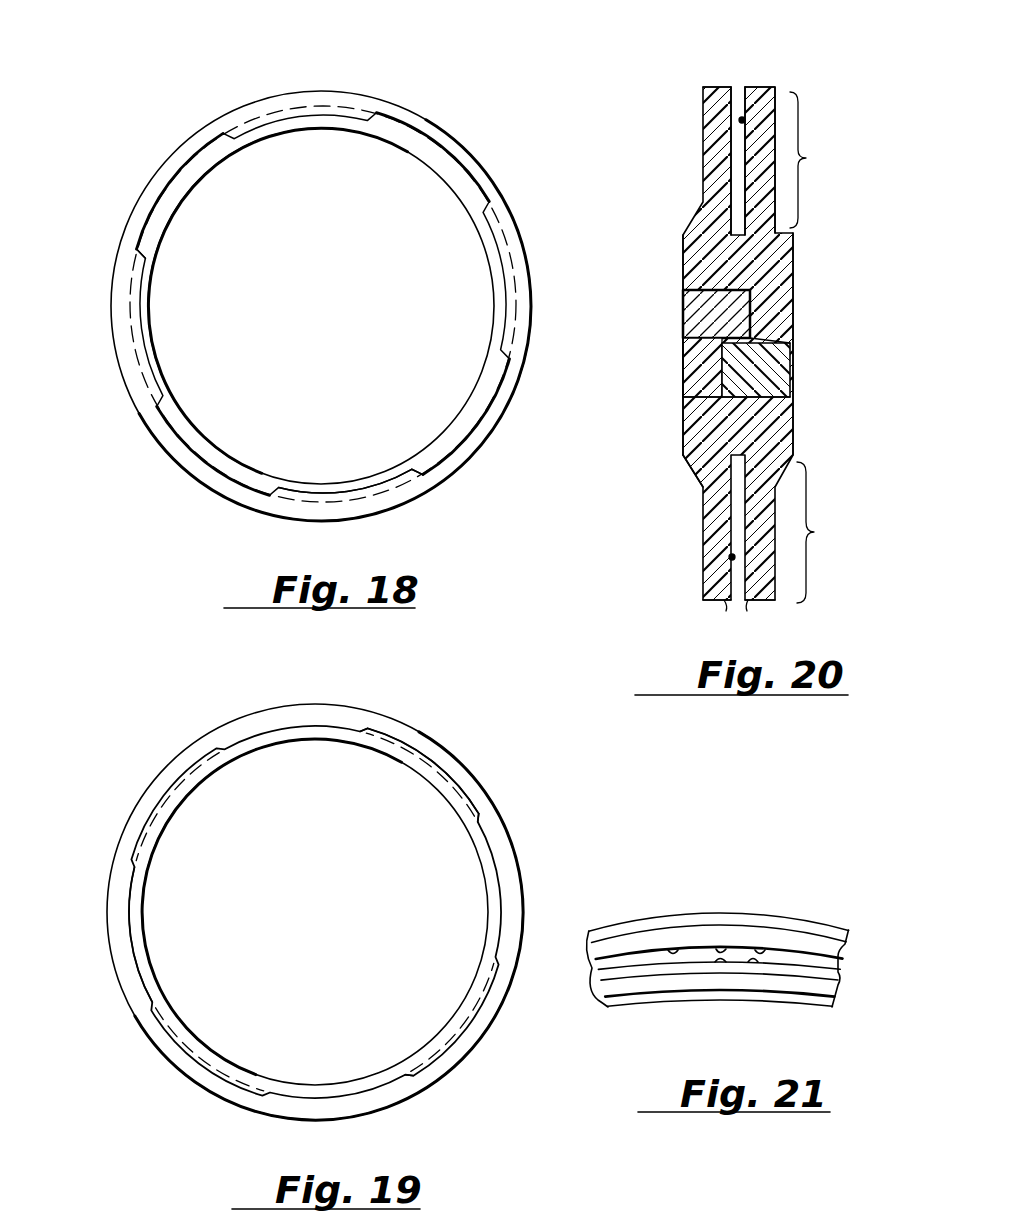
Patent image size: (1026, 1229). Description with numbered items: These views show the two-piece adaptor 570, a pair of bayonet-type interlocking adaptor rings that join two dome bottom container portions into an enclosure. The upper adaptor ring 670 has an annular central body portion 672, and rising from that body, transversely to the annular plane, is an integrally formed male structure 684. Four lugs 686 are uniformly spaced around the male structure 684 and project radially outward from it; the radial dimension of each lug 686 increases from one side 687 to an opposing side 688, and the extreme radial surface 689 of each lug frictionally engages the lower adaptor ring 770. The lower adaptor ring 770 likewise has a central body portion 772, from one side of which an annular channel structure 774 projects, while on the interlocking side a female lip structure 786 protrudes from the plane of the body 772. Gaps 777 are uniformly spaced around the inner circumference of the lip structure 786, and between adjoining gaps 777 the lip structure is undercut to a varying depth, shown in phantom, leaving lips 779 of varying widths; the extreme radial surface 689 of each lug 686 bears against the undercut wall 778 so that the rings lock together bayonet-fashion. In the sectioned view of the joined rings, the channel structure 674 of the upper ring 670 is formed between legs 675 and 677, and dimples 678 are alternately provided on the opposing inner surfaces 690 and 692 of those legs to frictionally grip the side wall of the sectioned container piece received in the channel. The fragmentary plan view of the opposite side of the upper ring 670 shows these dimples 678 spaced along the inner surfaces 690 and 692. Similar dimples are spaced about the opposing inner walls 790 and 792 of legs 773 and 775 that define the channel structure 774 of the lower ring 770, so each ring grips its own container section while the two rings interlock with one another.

In FIG. 20, the two-piece adaptor 570 is at (683, 338).
In FIG. 19, the upper adaptor ring 670 is at (146, 948).
In FIG. 20, the upper adaptor ring 670 is at (793, 266).
In FIG. 21, the upper adaptor ring 670 is at (601, 985).
In FIG. 19, the central body portion 672 is at (510, 884).
In FIG. 20, the central body portion 672 is at (693, 262).
In FIG. 21, the central body portion 672 is at (835, 992).
In FIG. 20, the channel structure 674 is at (810, 160).
In FIG. 20, the leg 675 is at (707, 92).
In FIG. 21, the leg 675 is at (803, 942).
In FIG. 20, the leg 677 is at (775, 90).
In FIG. 21, the leg 677 is at (816, 987).
In FIG. 20, the dimples 678 is at (740, 121).
In FIG. 21, the dimples 678 is at (674, 950).
In FIG. 19, the male structure 684 is at (490, 866).
In FIG. 20, the male structure 684 is at (775, 372).
In FIG. 19, the lugs 686 is at (446, 800).
In FIG. 20, the lugs 686 is at (720, 389).
In FIG. 19, the one side of lug 687 is at (415, 737).
In FIG. 19, the opposing side of lug 688 is at (498, 805).
In FIG. 19, the extreme radial surface 689 is at (460, 764).
In FIG. 20, the inner surface of leg 690 is at (731, 88).
In FIG. 21, the inner surface of leg 690 is at (724, 948).
In FIG. 20, the inner surface of leg 692 is at (746, 88).
In FIG. 21, the inner surface of leg 692 is at (754, 968).
In FIG. 18, the lower adaptor ring 770 is at (488, 320).
In FIG. 20, the lower adaptor ring 770 is at (683, 455).
In FIG. 18, the central body portion 772 is at (207, 165).
In FIG. 20, the central body portion 772 is at (785, 428).
In FIG. 20, the leg 773 is at (712, 596).
In FIG. 20, the annular channel structure 774 is at (822, 532).
In FIG. 20, the leg 775 is at (765, 601).
In FIG. 18, the gaps 777 is at (488, 204).
In FIG. 18, the undercut wall 778 is at (364, 505).
In FIG. 20, the undercut wall 778 is at (770, 352).
In FIG. 18, the lips 779 is at (146, 388).
In FIG. 20, the lips 779 is at (748, 320).
In FIG. 18, the lip structure 786 is at (363, 108).
In FIG. 20, the lip structure 786 is at (700, 362).
In FIG. 20, the inner wall of leg 790 is at (728, 606).
In FIG. 20, the inner wall of leg 792 is at (746, 606).